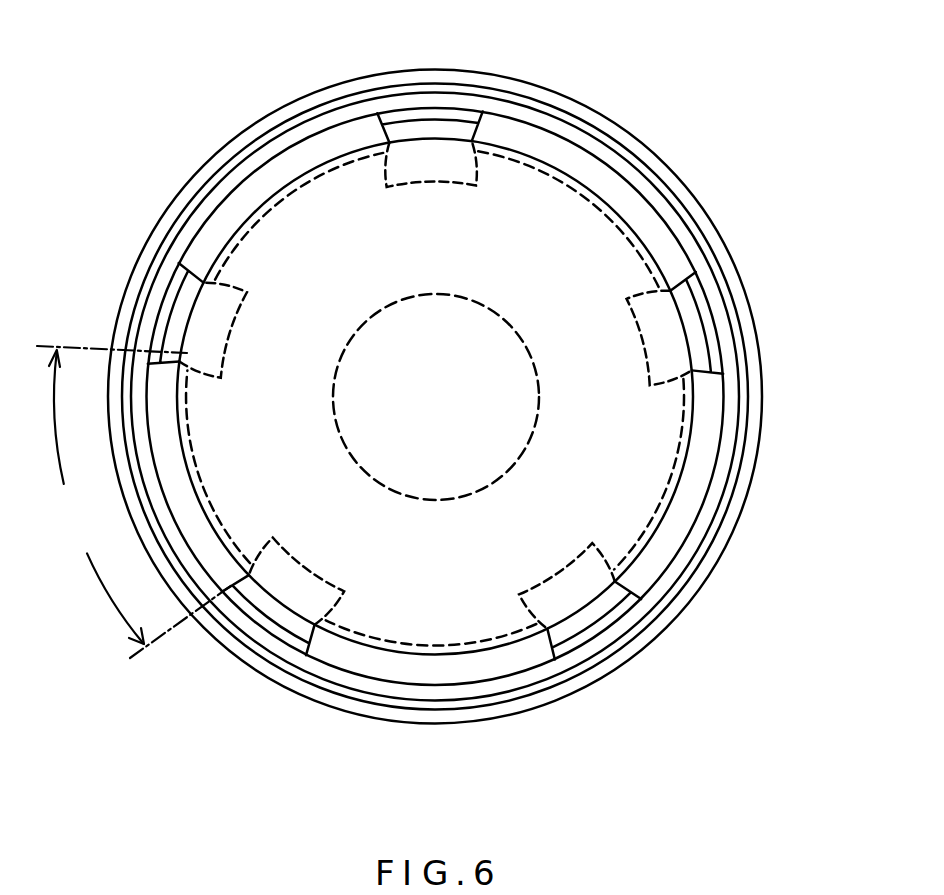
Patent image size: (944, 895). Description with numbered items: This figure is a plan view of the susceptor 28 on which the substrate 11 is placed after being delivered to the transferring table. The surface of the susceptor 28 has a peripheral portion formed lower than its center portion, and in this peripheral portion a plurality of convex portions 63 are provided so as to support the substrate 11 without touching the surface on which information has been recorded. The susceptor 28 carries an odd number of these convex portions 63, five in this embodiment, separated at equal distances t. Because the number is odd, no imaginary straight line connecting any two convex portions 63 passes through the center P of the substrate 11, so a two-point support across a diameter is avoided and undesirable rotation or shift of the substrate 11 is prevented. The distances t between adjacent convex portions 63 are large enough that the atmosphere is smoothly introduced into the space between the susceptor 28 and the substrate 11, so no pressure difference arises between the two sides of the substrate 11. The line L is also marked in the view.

The convex portions 63 is at (433, 112).
The substrate 11 is at (583, 440).
The susceptor 28 is at (703, 592).
The line L is at (703, 237).
The center of substrate P is at (433, 398).
The distance between adjacent convex portions t is at (134, 502).